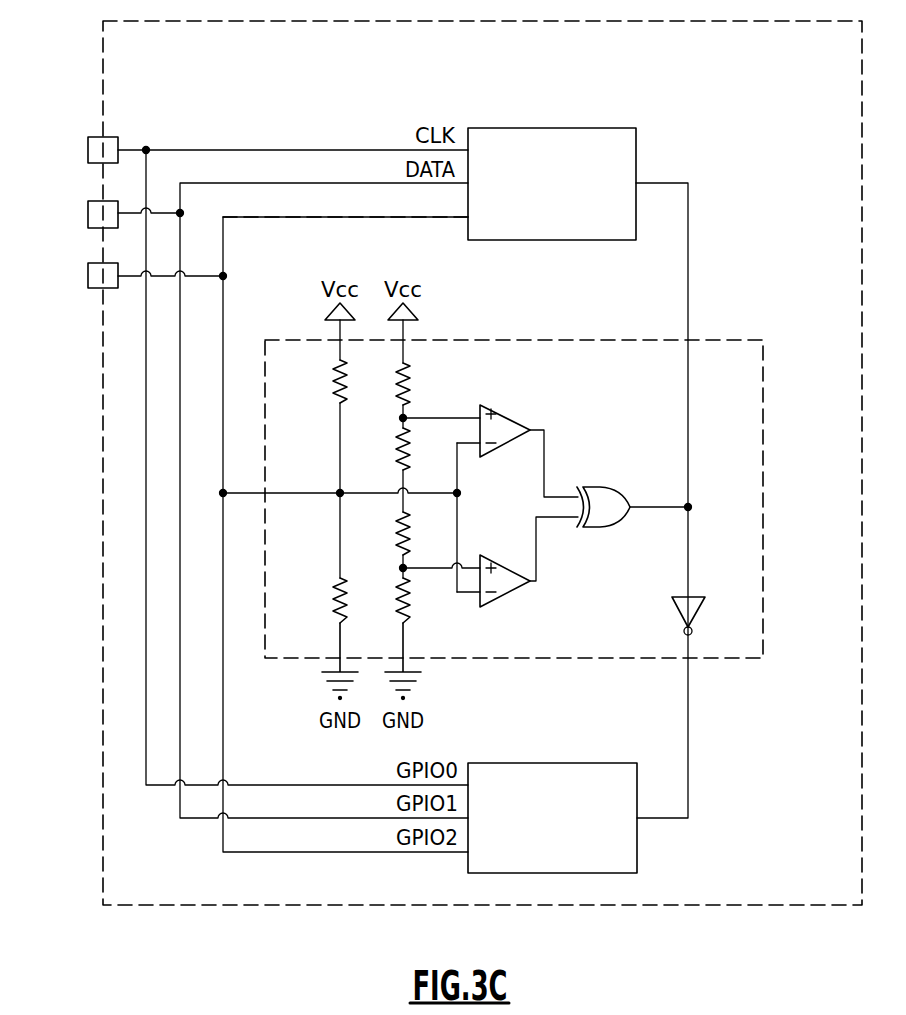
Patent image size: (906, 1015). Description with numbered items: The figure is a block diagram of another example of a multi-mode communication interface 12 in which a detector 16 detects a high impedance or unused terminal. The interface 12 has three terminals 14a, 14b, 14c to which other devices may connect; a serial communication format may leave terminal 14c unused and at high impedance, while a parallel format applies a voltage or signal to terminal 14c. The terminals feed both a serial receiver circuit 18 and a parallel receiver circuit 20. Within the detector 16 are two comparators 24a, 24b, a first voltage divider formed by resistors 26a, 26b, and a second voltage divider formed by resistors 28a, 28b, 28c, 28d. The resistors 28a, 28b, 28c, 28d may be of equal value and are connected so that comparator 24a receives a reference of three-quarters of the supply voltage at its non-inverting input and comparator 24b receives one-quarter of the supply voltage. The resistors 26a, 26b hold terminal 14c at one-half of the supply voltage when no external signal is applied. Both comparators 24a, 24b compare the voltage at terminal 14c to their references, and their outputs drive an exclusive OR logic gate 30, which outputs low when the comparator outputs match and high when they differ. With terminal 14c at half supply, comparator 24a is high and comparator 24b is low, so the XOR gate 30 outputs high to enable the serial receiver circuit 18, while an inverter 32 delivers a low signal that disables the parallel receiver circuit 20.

The communication interface 12 is at (811, 59).
The terminal 14a is at (88, 143).
The terminal 14b is at (88, 207).
The terminal 14c is at (88, 268).
The detector 16 is at (711, 376).
The serial receiver circuit 18 is at (539, 225).
The parallel receiver circuit 20 is at (538, 860).
The comparator 24a is at (519, 425).
The comparator 24b is at (514, 590).
The resistor 26a is at (336, 390).
The resistor 26b is at (336, 608).
The resistor 28a is at (412, 368).
The resistor 28b is at (412, 434).
The resistor 28c is at (398, 524).
The resistor 28d is at (413, 614).
The exclusive OR logic gate 30 is at (620, 494).
The inverter 32 is at (677, 605).